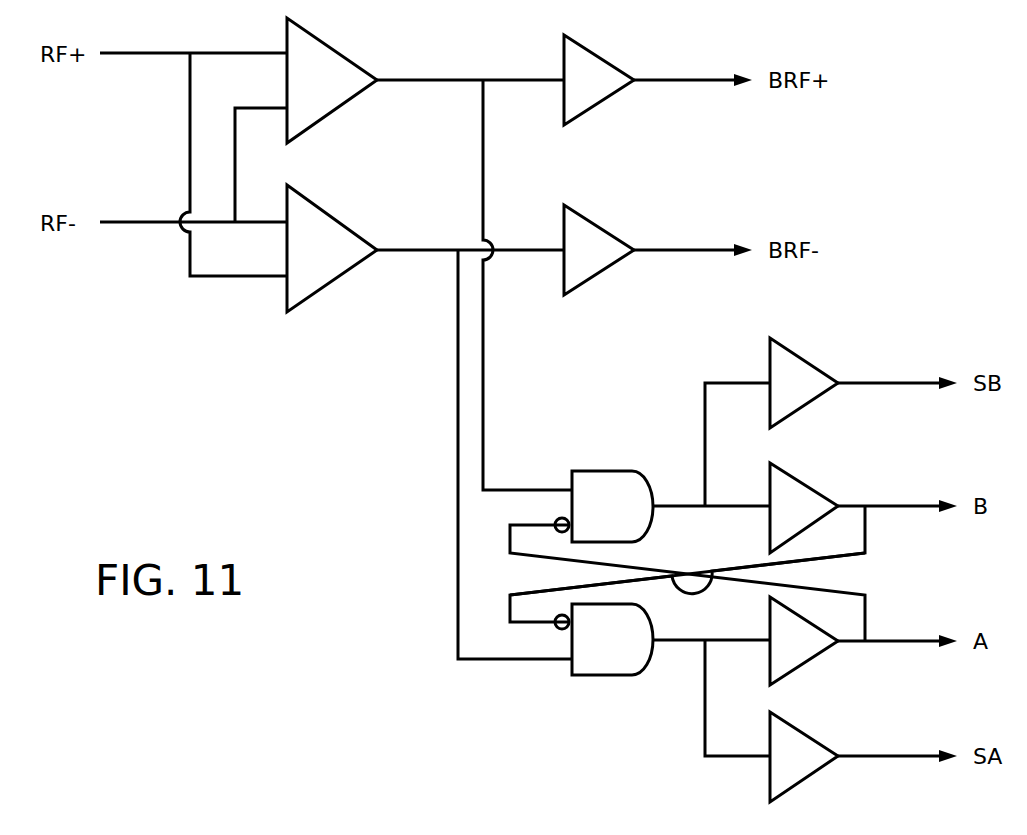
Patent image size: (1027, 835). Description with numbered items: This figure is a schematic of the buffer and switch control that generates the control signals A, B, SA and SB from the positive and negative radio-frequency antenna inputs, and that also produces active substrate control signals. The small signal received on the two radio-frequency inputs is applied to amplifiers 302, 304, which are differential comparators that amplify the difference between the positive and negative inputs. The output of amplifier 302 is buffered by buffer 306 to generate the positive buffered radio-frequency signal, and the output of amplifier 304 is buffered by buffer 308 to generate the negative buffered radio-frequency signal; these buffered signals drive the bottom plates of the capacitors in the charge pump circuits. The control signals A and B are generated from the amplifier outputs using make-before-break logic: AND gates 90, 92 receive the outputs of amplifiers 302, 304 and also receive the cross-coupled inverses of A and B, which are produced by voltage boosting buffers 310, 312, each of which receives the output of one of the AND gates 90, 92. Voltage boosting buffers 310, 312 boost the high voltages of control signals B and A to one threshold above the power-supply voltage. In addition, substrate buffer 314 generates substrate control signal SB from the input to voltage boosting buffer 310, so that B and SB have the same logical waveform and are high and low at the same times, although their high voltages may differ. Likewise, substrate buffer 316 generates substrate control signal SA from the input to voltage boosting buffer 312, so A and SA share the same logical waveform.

The amplifier 302 is at (339, 53).
The amplifier 304 is at (339, 223).
The buffer 306 is at (606, 60).
The buffer 308 is at (606, 230).
The voltage boosting buffer 310 is at (812, 488).
The voltage boosting buffer 312 is at (814, 658).
The substrate buffer 314 is at (812, 364).
The substrate buffer 316 is at (814, 773).
The AND gate 90 is at (604, 506).
The AND gate 92 is at (604, 639).